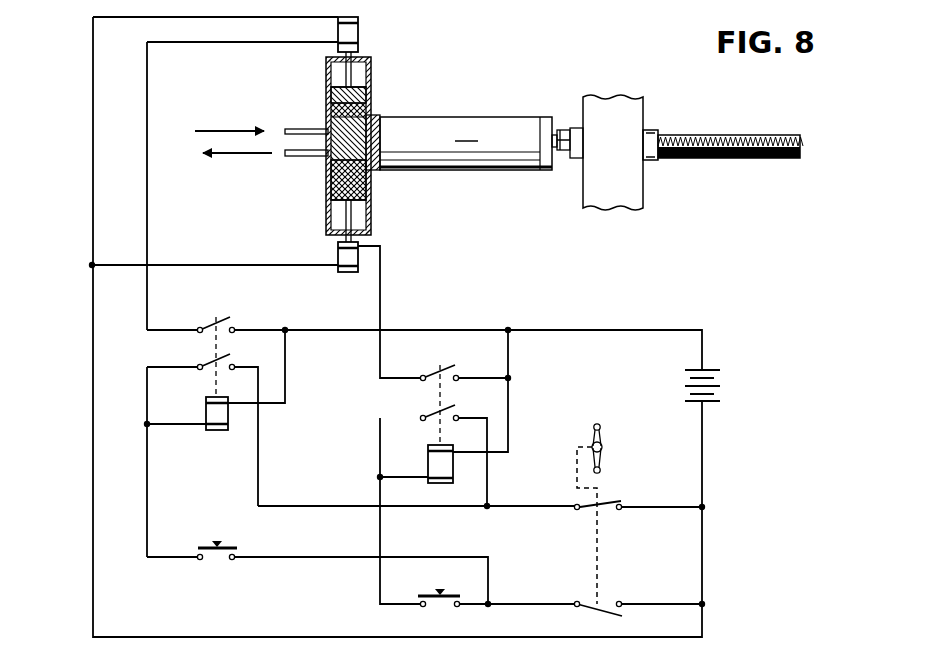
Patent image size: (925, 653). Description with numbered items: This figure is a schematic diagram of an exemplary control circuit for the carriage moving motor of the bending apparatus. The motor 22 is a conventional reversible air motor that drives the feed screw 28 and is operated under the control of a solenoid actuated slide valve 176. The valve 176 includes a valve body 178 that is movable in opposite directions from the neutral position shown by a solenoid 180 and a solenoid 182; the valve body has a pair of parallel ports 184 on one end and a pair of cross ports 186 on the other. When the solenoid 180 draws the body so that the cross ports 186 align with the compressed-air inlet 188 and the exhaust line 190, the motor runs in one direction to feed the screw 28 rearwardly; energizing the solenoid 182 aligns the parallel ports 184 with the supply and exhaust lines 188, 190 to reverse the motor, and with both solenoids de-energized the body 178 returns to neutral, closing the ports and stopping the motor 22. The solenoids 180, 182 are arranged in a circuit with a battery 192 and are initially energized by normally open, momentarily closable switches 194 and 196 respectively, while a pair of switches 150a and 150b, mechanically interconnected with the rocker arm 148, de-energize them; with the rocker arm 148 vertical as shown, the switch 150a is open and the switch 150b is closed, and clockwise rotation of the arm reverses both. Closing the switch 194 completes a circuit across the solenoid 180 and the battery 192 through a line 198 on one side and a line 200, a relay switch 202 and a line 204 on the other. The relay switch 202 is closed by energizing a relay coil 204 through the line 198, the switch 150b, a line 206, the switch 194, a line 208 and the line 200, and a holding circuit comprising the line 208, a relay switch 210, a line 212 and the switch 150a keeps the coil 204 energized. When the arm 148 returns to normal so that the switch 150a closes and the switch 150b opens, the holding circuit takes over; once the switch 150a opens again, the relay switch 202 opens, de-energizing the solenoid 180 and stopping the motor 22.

The carriage feed screw driving motor 22 is at (504, 152).
The feed screw 28 is at (738, 117).
The rocker arm 148 is at (604, 460).
The switch 150a is at (603, 502).
The switch 150b is at (598, 600).
The solenoid actuated slide valve 176 is at (396, 76).
The valve body 178 is at (353, 128).
The solenoid 180 is at (354, 35).
The solenoid 182 is at (355, 258).
The parallel ports 184 is at (332, 98).
The cross ports 186 is at (343, 185).
The inlet 188 is at (302, 128).
The exhaust line 190 is at (303, 156).
The battery 192 is at (715, 387).
The switch 194 is at (203, 542).
The switch 196 is at (438, 593).
The line 198 is at (92, 322).
The line 200 is at (483, 303).
The relay switch 202 is at (216, 317).
The relay coil 204 is at (147, 227).
The line 206 is at (496, 542).
The line 208 is at (147, 493).
The relay switch 210 is at (203, 358).
The line 212 is at (322, 505).